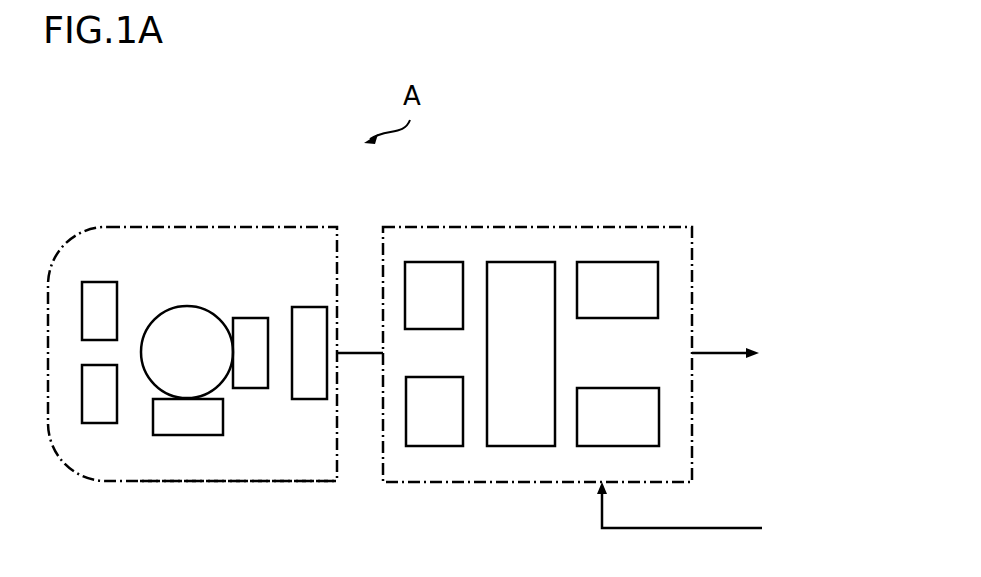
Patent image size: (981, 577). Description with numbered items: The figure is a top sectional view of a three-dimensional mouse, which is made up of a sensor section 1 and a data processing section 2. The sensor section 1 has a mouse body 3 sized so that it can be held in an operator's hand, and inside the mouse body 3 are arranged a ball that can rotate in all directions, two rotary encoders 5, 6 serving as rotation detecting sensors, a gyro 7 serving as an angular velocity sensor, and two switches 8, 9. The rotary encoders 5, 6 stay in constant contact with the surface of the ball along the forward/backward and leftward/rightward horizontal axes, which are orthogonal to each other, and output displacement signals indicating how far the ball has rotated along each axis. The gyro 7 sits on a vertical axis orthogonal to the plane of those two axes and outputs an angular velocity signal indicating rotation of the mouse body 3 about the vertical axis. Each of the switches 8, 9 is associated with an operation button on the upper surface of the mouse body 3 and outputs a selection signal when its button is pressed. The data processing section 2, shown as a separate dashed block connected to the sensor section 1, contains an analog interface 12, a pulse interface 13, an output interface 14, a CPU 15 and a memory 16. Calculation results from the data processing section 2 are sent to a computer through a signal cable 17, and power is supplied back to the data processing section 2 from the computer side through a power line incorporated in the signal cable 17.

The sensor section 1 is at (196, 257).
The data processing section 2 is at (678, 258).
The mouse body 3 is at (256, 481).
The rotary encoder 5 is at (245, 332).
The rotary encoder 6 is at (188, 422).
The gyro 7 is at (313, 320).
The switch 8 is at (107, 410).
The switch 9 is at (105, 296).
The analog interface 12 is at (440, 273).
The pulse interface 13 is at (442, 435).
The output interface 14 is at (622, 273).
The CPU 15 is at (530, 273).
The memory 16 is at (623, 423).
The signal cable 17 is at (713, 353).